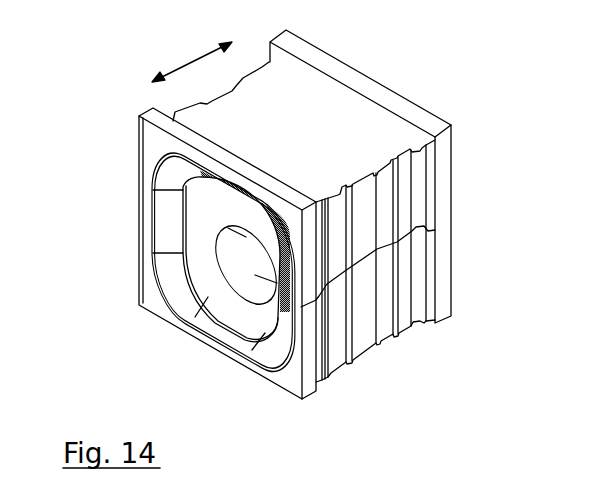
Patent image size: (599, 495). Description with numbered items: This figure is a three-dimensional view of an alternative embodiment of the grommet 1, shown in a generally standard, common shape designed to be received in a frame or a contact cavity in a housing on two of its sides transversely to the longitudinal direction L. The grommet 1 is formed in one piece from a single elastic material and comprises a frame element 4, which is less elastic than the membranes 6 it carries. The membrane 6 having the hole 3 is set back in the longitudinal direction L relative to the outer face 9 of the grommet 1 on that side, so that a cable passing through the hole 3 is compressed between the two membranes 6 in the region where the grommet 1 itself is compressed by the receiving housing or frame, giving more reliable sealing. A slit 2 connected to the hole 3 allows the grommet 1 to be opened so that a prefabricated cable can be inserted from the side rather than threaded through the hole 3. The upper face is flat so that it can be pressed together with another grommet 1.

The grommet 1 is at (216, 117).
The slit 2 is at (397, 242).
The hole 3 is at (253, 270).
The frame element 4 is at (370, 243).
The membrane 6 is at (215, 282).
The outer face 9 is at (157, 302).